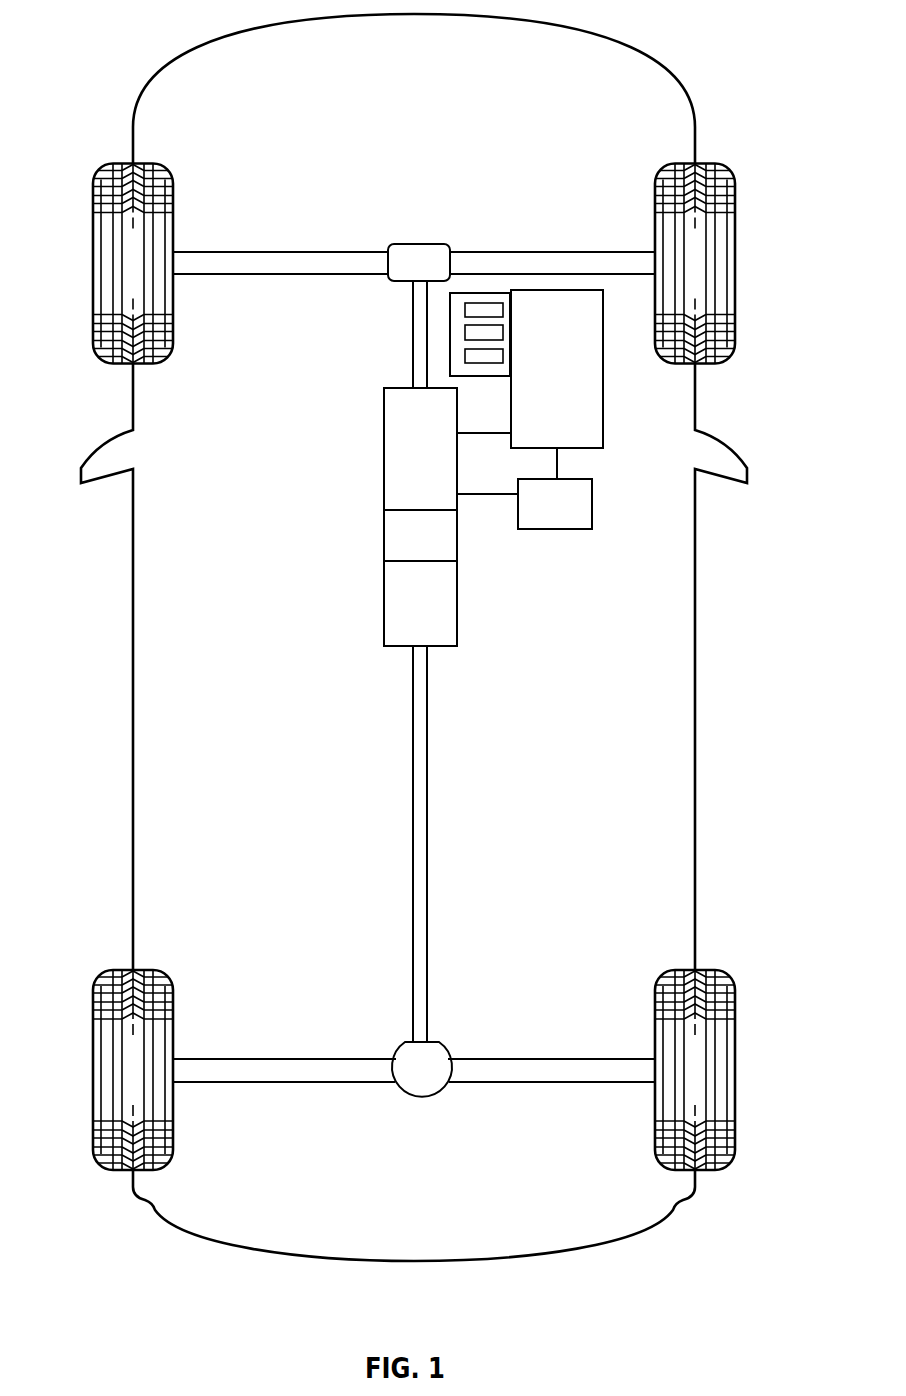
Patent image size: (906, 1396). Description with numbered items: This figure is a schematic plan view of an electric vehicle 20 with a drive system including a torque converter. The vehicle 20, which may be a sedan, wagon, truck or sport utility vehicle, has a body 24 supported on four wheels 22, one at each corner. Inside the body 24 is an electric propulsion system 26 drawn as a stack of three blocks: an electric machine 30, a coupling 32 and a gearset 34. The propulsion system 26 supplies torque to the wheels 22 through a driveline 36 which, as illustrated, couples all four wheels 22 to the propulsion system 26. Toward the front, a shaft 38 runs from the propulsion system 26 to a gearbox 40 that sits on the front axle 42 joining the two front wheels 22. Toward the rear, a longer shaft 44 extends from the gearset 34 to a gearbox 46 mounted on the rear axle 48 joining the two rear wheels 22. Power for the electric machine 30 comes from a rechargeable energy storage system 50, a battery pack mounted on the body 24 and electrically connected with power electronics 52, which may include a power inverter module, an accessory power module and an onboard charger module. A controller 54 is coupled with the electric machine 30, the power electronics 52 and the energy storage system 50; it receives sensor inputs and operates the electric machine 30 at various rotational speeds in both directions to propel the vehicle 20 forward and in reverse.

The vehicle 20 is at (663, 36).
The wheels 22 is at (93, 265).
The body 24 is at (133, 720).
The propulsion system 26 is at (477, 517).
The electric machine 30 is at (434, 458).
The coupling 32 is at (434, 553).
The gearset 34 is at (434, 617).
The driveline 36 is at (445, 871).
The shaft 38 is at (420, 328).
The gearbox 40 is at (403, 246).
The axle 42 is at (305, 263).
The shaft 44 is at (417, 785).
The gearbox 46 is at (408, 1050).
The axle 48 is at (323, 1068).
The rechargeable energy storage system 50 is at (571, 388).
The power electronics 52 is at (478, 282).
The controller 54 is at (569, 521).